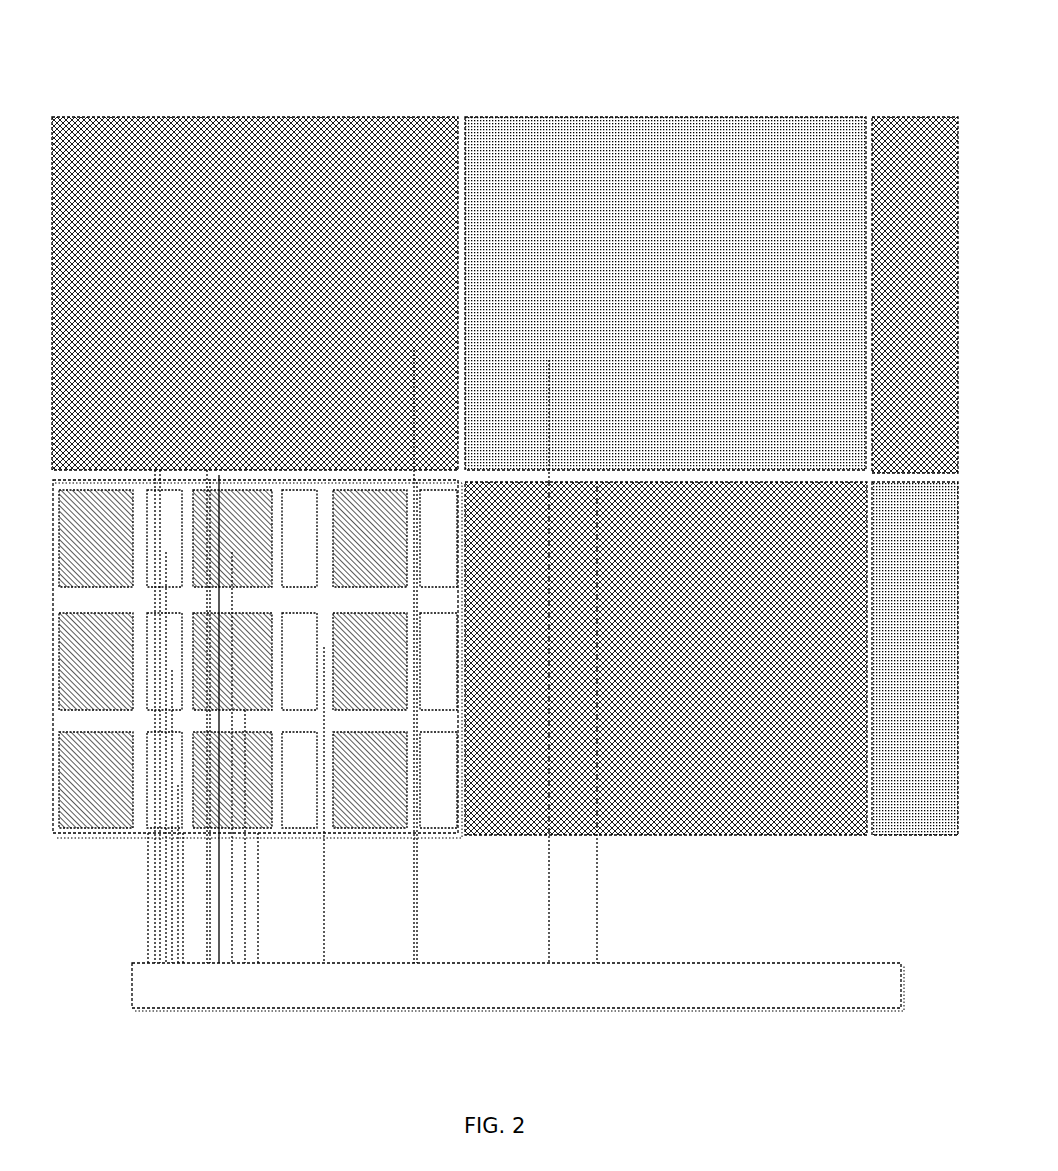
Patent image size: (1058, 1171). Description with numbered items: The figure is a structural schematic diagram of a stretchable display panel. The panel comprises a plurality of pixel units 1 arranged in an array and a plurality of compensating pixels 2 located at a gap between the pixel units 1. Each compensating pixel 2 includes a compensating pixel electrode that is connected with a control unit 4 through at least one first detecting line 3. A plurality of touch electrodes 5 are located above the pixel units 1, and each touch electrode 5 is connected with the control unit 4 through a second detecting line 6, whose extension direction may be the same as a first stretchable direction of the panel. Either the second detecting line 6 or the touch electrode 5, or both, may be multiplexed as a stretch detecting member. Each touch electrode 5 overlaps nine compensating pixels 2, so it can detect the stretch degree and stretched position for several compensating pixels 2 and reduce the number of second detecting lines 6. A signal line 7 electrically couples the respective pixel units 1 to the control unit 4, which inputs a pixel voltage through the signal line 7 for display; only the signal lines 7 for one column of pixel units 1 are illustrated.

The pixel unit 1 is at (369, 116).
The compensating pixel 2 is at (575, 116).
The first detecting line 3 is at (148, 908).
The control unit 4 is at (523, 992).
The touch electrode 5 is at (687, 116).
The second detecting line 6 is at (598, 905).
The signal line 7 is at (258, 905).